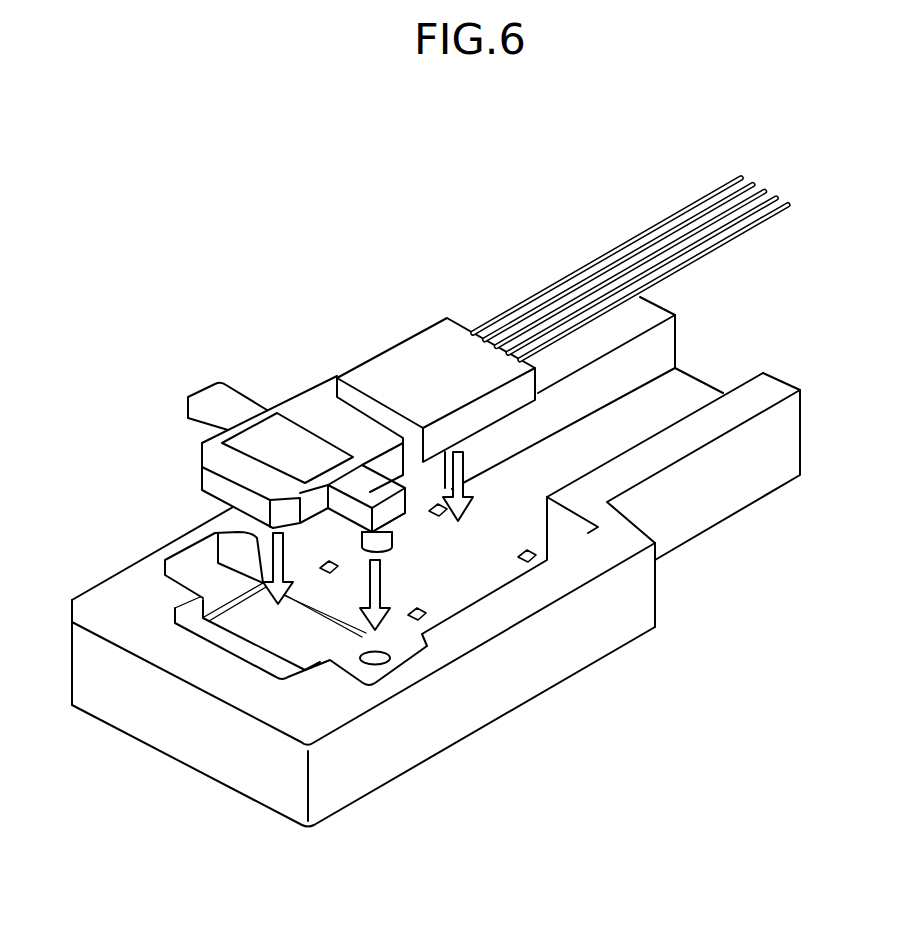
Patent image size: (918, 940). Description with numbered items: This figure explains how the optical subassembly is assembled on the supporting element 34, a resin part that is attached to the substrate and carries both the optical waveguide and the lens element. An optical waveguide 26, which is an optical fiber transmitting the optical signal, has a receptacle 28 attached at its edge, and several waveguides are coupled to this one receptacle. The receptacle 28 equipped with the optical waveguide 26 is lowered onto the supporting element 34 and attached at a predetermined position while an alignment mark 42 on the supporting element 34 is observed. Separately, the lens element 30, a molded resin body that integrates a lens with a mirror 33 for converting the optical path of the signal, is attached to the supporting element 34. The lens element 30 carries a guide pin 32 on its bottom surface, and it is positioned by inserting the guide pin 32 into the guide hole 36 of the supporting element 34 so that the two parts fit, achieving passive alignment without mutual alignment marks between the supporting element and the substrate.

The optical waveguide 26 is at (636, 234).
The receptacle 28 is at (430, 343).
The lens element 30 is at (305, 400).
The guide pin 32 is at (393, 541).
The mirror 33 is at (277, 448).
The supporting element 34 is at (270, 780).
The guide hole 36 is at (383, 661).
The alignment mark 42 is at (535, 559).